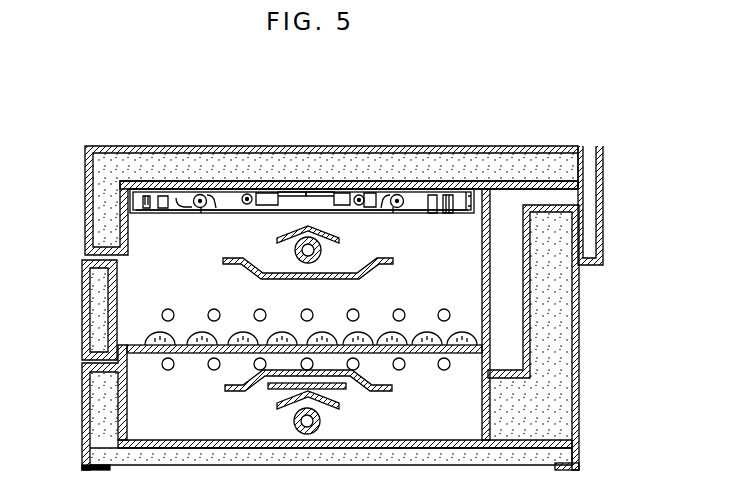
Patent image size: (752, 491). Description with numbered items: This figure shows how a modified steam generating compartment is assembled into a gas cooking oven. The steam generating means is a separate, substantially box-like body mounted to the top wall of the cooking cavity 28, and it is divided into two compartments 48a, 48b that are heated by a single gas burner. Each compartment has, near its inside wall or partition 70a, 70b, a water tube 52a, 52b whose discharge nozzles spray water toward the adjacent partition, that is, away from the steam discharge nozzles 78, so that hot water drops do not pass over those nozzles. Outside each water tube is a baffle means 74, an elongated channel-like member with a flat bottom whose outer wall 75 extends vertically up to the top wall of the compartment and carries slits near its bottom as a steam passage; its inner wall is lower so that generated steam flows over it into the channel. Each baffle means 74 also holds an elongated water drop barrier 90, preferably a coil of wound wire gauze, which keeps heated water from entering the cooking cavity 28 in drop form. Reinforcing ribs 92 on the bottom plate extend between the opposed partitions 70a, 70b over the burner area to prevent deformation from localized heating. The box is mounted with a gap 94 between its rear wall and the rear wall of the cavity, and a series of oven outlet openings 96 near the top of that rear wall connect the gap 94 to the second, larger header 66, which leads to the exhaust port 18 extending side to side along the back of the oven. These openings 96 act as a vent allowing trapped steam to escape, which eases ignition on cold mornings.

The exhaust port 18 is at (604, 149).
The oven cooking cavity 28 is at (313, 303).
The steam generating compartment 48a is at (225, 191).
The steam generating compartment 48b is at (378, 193).
The water tube 52a is at (246, 193).
The water tube 52b is at (359, 194).
The second header 66 is at (545, 293).
The partition 70a is at (281, 191).
The partition 70b is at (331, 198).
The baffle means 74 is at (204, 191).
The outer wall 75 is at (182, 200).
The steam discharge nozzles 78 is at (150, 204).
The water drop barrier 90 is at (201, 213).
The reinforcing ribs 92 is at (283, 214).
The gap 94 is at (475, 214).
The oven outlet openings 96 is at (520, 187).